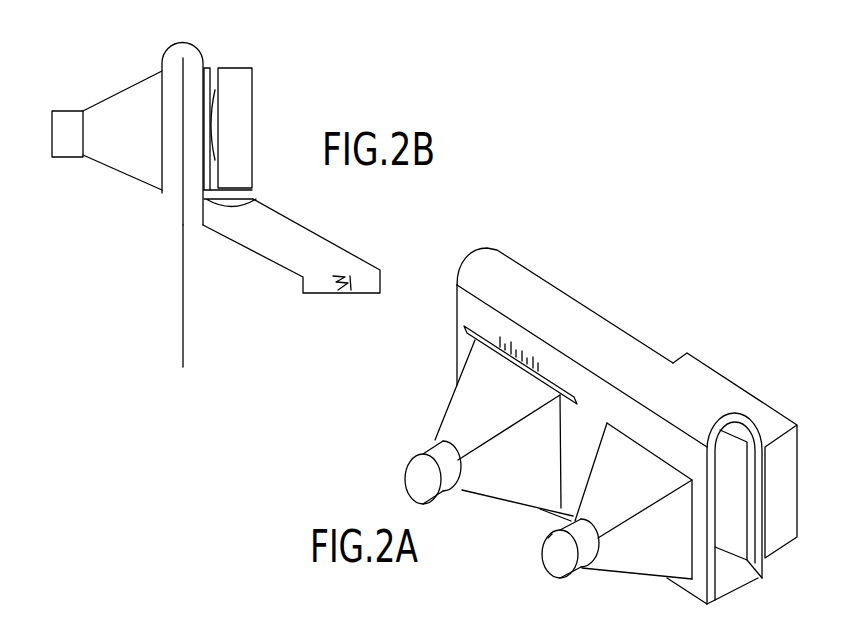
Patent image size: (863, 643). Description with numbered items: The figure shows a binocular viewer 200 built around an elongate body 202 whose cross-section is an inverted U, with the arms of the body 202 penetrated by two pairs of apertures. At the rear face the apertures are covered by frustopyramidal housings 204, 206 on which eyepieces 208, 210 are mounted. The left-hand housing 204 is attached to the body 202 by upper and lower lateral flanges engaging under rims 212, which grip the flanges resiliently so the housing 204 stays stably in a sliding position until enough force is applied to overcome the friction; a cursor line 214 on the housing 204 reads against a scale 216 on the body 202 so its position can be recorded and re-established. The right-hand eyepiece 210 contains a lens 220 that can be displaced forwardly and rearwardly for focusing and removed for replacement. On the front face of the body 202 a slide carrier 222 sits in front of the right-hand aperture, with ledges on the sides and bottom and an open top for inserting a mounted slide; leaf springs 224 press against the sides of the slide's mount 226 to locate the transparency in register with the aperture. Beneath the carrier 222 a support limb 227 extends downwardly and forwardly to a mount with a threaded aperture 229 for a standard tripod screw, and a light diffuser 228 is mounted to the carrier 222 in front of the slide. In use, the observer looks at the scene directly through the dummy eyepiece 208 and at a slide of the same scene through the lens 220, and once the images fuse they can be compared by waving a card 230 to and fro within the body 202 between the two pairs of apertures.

In FIG. 2B, the binocular viewer 200 is at (165, 204).
In FIG. 2A, the binocular viewer 200 is at (757, 384).
In FIG. 2B, the elongate body 202 is at (162, 55).
In FIG. 2A, the elongate body 202 is at (490, 265).
In FIG. 2A, the left-hand frustopyramidal housing 204 is at (448, 420).
In FIG. 2B, the frustopyramidal housing 206 is at (122, 130).
In FIG. 2A, the frustopyramidal housing 206 is at (640, 573).
In FIG. 2A, the dummy eyepiece 208 is at (402, 466).
In FIG. 2B, the right-hand eyepiece 210 is at (72, 158).
In FIG. 2A, the right-hand eyepiece 210 is at (558, 578).
In FIG. 2A, the rims 212 is at (583, 394).
In FIG. 2A, the cursor line 214 is at (535, 366).
In FIG. 2A, the scale 216 is at (500, 341).
In FIG. 2A, the lens 220 is at (548, 544).
In FIG. 2B, the slide carrier 222 is at (208, 63).
In FIG. 2B, the leaf springs 224 is at (213, 134).
In FIG. 2B, the mount 226 is at (255, 205).
In FIG. 2B, the support limb 227 is at (320, 240).
In FIG. 2B, the light diffuser 228 is at (252, 84).
In FIG. 2B, the threaded aperture 229 is at (338, 294).
In FIG. 2B, the card 230 is at (183, 330).